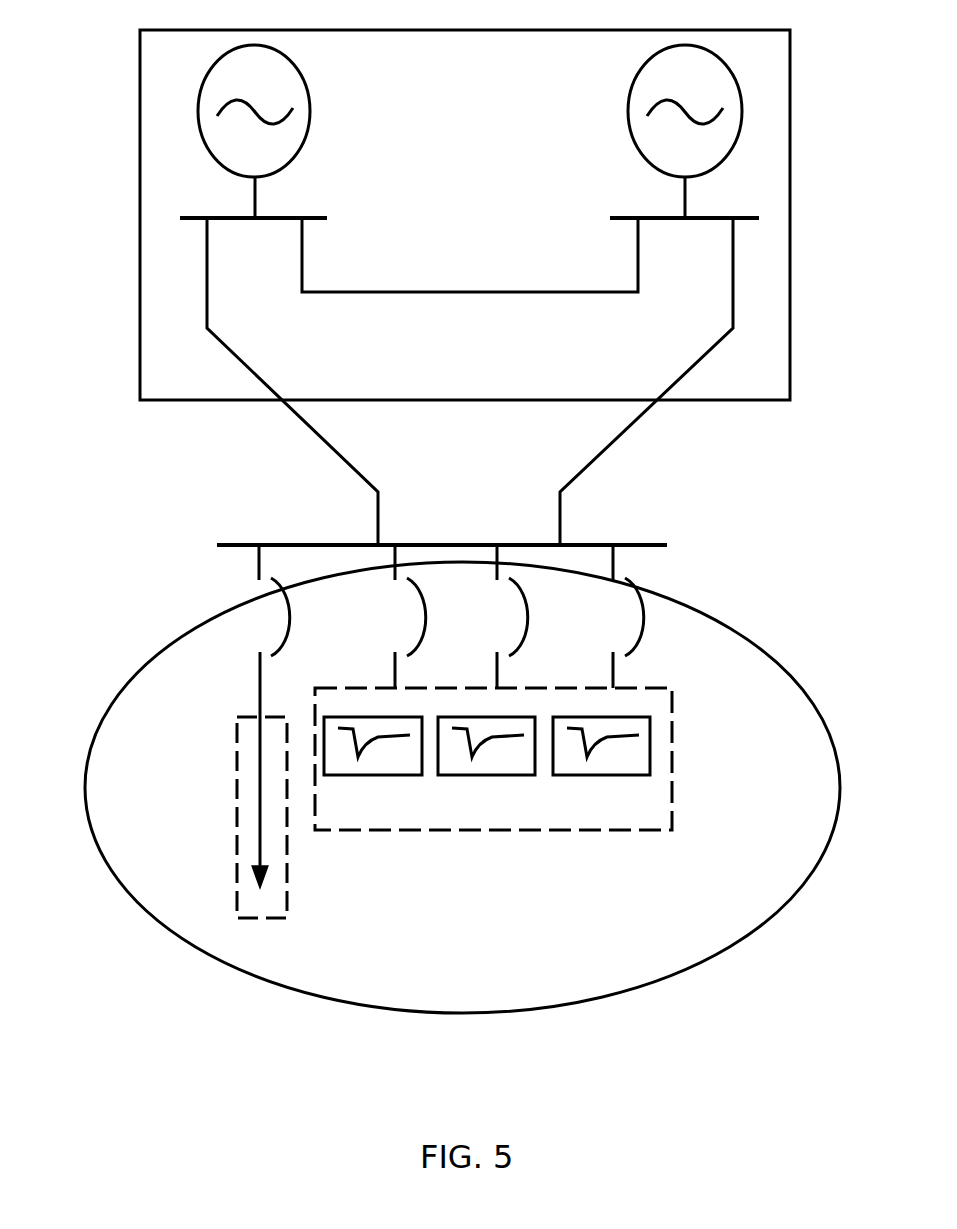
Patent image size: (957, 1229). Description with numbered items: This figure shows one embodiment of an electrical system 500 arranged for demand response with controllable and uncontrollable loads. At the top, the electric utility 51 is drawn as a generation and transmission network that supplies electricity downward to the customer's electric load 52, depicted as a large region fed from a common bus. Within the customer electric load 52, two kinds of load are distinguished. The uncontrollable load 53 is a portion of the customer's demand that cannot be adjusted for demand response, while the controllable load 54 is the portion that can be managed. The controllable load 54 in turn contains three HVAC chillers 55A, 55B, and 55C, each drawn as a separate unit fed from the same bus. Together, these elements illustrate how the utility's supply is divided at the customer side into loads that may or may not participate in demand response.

The electric utility 51 is at (140, 215).
The customer electric load 52 is at (120, 887).
The uncontrollable load 53 is at (230, 763).
The controllable load 54 is at (553, 816).
The HVAC chiller 55A is at (375, 717).
The HVAC chiller 55B is at (490, 717).
The HVAC chiller 55C is at (632, 717).
The electrical system 500 is at (228, 1119).